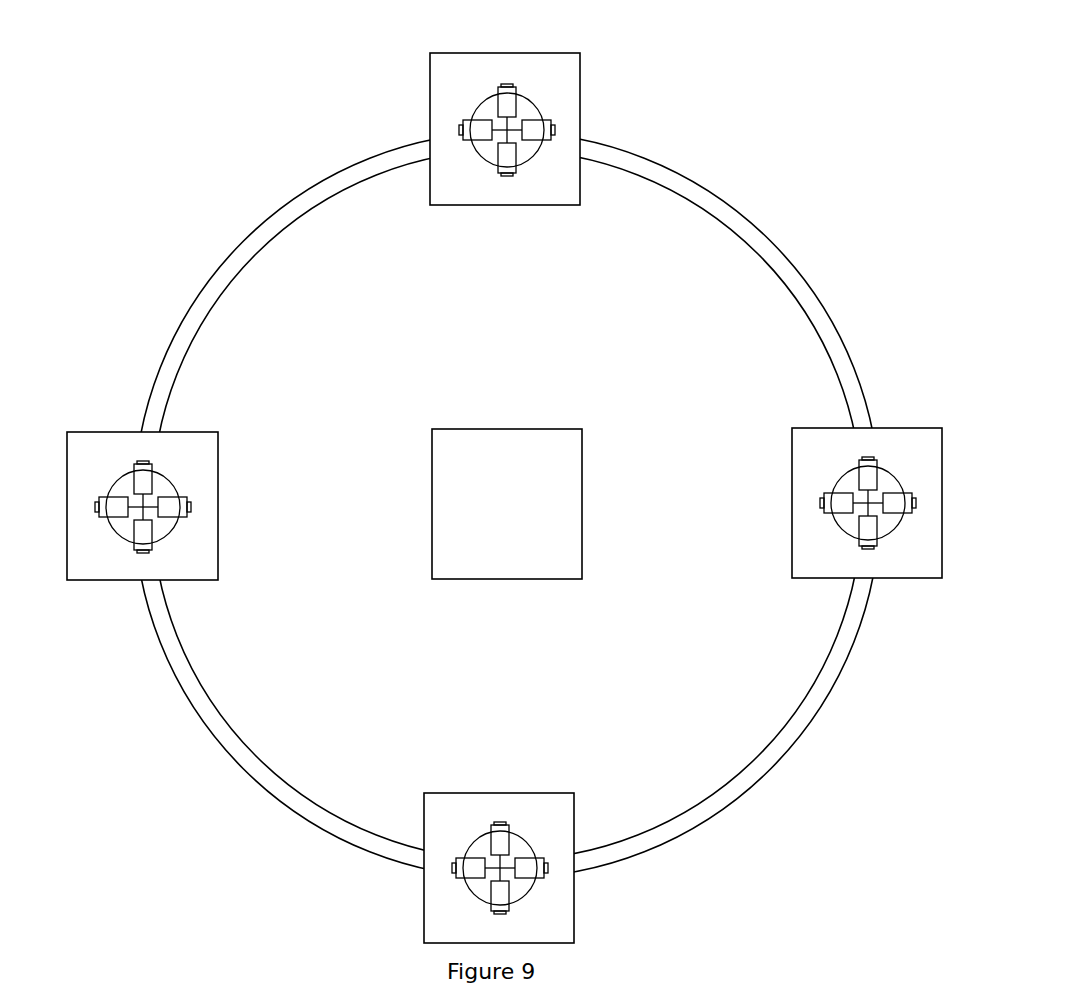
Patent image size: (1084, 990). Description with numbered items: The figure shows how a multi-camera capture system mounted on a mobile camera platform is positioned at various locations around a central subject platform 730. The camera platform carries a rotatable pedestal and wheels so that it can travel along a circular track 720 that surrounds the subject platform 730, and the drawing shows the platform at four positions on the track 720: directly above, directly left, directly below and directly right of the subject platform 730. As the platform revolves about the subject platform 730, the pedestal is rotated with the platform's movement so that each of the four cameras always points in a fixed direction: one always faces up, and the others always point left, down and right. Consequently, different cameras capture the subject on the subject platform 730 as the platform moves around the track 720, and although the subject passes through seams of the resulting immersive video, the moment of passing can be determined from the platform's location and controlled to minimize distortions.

The track 720 is at (728, 203).
The subject platform 730 is at (528, 547).